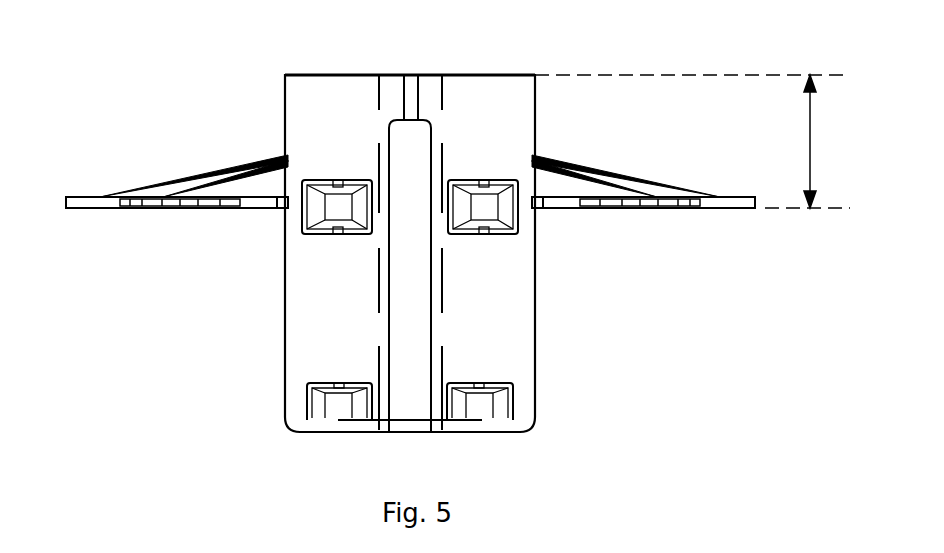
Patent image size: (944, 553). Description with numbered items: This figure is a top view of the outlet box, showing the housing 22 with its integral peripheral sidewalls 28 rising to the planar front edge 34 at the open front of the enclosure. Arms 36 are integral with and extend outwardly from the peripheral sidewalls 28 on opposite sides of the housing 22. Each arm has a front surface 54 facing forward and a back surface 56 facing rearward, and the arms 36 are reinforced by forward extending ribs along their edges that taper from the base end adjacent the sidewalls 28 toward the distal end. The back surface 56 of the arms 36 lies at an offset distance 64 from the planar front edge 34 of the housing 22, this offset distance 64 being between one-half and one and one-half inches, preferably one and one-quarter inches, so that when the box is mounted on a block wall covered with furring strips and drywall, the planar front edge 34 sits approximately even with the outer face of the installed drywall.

The housing 22 is at (604, 318).
The peripheral sidewalls 28 is at (410, 253).
The planar front edge 34 is at (473, 74).
The arms 36 is at (103, 203).
The front surface 54 is at (75, 185).
The back surface 56 is at (143, 222).
The offset distance 64 is at (811, 139).